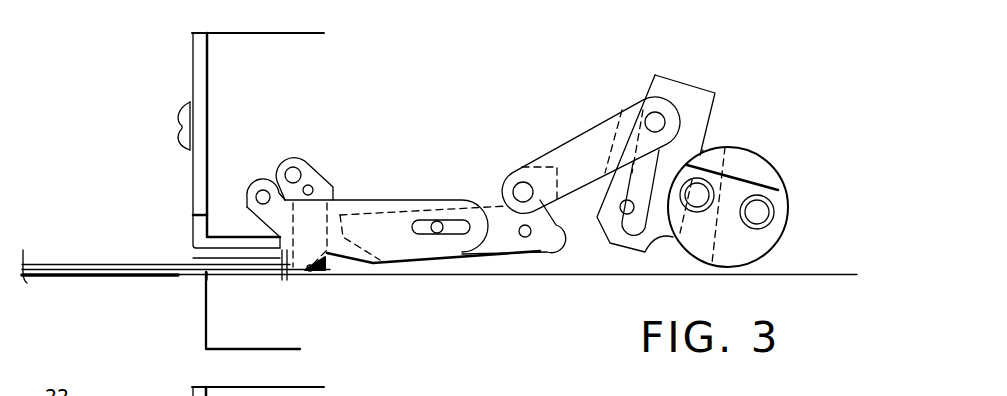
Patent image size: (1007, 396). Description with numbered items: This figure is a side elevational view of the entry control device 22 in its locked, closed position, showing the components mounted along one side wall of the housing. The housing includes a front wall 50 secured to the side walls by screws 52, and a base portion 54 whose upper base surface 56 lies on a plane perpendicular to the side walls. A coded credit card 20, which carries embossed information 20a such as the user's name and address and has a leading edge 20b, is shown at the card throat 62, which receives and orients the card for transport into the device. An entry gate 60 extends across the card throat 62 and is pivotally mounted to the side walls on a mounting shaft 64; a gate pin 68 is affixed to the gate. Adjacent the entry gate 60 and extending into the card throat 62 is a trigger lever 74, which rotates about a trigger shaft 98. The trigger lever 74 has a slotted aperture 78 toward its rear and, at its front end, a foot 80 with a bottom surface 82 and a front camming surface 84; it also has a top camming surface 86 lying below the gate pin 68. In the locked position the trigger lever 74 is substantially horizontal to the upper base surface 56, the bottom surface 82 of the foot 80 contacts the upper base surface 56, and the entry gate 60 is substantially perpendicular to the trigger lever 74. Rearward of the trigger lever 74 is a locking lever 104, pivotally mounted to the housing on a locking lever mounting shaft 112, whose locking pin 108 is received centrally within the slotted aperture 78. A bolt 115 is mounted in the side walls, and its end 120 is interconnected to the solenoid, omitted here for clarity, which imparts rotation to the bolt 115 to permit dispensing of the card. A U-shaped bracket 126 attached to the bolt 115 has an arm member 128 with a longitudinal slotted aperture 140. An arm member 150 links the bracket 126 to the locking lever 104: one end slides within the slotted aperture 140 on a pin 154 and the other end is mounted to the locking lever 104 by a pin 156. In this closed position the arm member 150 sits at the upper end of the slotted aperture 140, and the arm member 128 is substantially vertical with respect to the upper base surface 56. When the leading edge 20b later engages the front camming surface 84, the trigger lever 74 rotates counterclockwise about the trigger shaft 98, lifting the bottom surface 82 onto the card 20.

The coded credit card 20 is at (90, 263).
The embossed information 20a is at (108, 282).
The leading edge 20b is at (282, 278).
The entry control device 22 is at (156, 60).
The front wall 50 is at (192, 81).
The screws 52 is at (178, 117).
The base portion 54 is at (205, 315).
The upper base surface 56 is at (797, 273).
The entry gate 60 is at (312, 177).
The card throat 62 is at (212, 260).
The mounting shaft 64 is at (291, 170).
The gate pin 68 is at (315, 190).
The trigger lever 74 is at (337, 245).
The slotted aperture 78 is at (460, 234).
The foot 80 is at (287, 262).
The bottom surface 82 is at (293, 273).
The front camming surface 84 is at (277, 260).
The top camming surface 86 is at (382, 200).
The trigger shaft 98 is at (253, 188).
The locking lever 104 is at (502, 238).
The locking pin 108 is at (437, 222).
The locking lever mounting shaft 112 is at (527, 238).
The bolt 115 is at (777, 172).
The end of bolt 120 is at (737, 188).
The U-shaped bracket 126 is at (715, 115).
The arm member 128 is at (693, 102).
The slotted aperture 140 is at (630, 213).
The arm member 150 is at (578, 157).
The pin 154 is at (652, 120).
The pin 156 is at (520, 186).